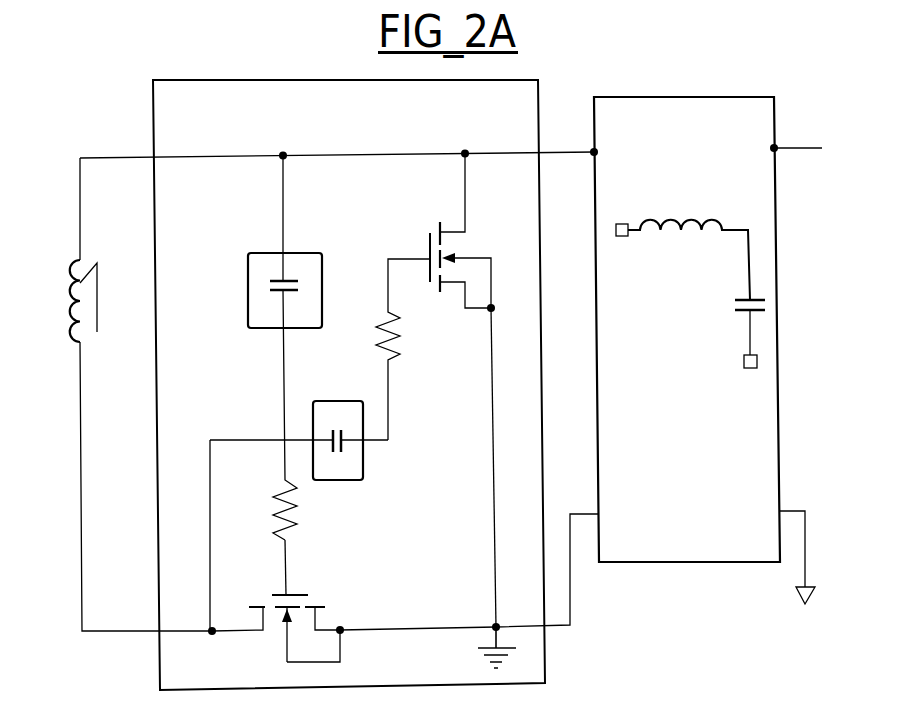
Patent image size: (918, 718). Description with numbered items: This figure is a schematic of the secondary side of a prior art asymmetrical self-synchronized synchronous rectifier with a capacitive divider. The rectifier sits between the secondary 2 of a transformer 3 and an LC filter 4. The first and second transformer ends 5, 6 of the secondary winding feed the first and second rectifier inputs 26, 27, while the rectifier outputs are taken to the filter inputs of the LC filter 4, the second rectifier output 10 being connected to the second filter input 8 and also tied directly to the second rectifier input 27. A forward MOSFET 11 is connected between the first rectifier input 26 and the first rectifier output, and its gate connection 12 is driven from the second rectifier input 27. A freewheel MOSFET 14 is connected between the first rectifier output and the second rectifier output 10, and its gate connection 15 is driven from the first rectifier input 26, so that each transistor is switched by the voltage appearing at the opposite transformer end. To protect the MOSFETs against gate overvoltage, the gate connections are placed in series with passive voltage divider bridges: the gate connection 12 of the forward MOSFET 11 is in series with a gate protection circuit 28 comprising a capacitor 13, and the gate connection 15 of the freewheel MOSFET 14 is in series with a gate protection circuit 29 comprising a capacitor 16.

The secondary 2 is at (77, 257).
The transformer 3 is at (67, 307).
The LC filter 4 is at (724, 97).
The first transformer end 5 is at (239, 594).
The first rectifier input 26 is at (213, 630).
The second transformer end 6 is at (311, 195).
The second rectifier input 27 is at (283, 154).
The second filter input 8 is at (501, 132).
The second rectifier output 10 is at (465, 152).
The forward MOSFET 11 is at (297, 594).
The gate connection 12 is at (283, 378).
The capacitor 13 is at (270, 290).
The freewheel MOSFET 14 is at (430, 244).
The gate connection 15 is at (388, 268).
The capacitor 16 is at (343, 430).
The gate protection circuit 28 is at (263, 259).
The gate protection circuit 29 is at (369, 425).